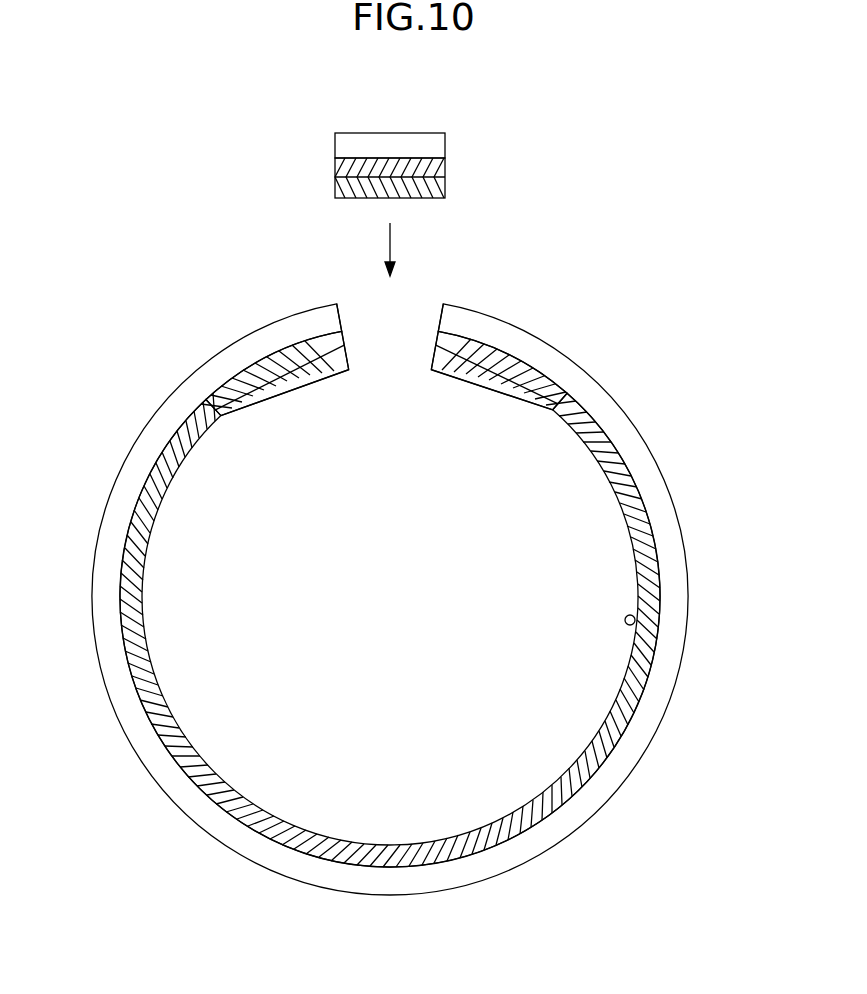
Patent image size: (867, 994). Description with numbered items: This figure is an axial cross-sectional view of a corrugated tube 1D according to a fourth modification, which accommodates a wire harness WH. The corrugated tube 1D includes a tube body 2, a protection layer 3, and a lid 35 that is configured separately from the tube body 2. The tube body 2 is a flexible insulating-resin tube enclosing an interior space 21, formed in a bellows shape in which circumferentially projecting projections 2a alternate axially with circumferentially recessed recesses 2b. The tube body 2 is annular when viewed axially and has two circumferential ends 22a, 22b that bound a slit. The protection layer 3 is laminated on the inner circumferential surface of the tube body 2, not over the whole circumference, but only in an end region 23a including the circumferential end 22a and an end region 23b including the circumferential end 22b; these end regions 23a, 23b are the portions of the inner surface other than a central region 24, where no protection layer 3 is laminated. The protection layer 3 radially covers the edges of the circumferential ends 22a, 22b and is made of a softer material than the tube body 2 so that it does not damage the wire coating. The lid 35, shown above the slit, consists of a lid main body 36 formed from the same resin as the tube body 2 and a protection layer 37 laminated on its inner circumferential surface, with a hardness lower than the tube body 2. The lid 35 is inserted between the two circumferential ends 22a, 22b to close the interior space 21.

The corrugated tube 1D is at (414, 548).
The tube body 2 is at (414, 567).
The projection 2a is at (225, 345).
The recess 2b is at (289, 340).
The protection layer 3 is at (230, 429).
The interior space 21 is at (613, 530).
The circumferential end 22a is at (338, 316).
The circumferential end 22b is at (442, 316).
The end region 23a is at (293, 372).
The end region 23b is at (498, 374).
The central region 24 is at (634, 618).
The lid 35 is at (421, 138).
The lid main body 36 is at (446, 140).
The protection layer 37 is at (446, 190).
The wire harness WH is at (561, 155).